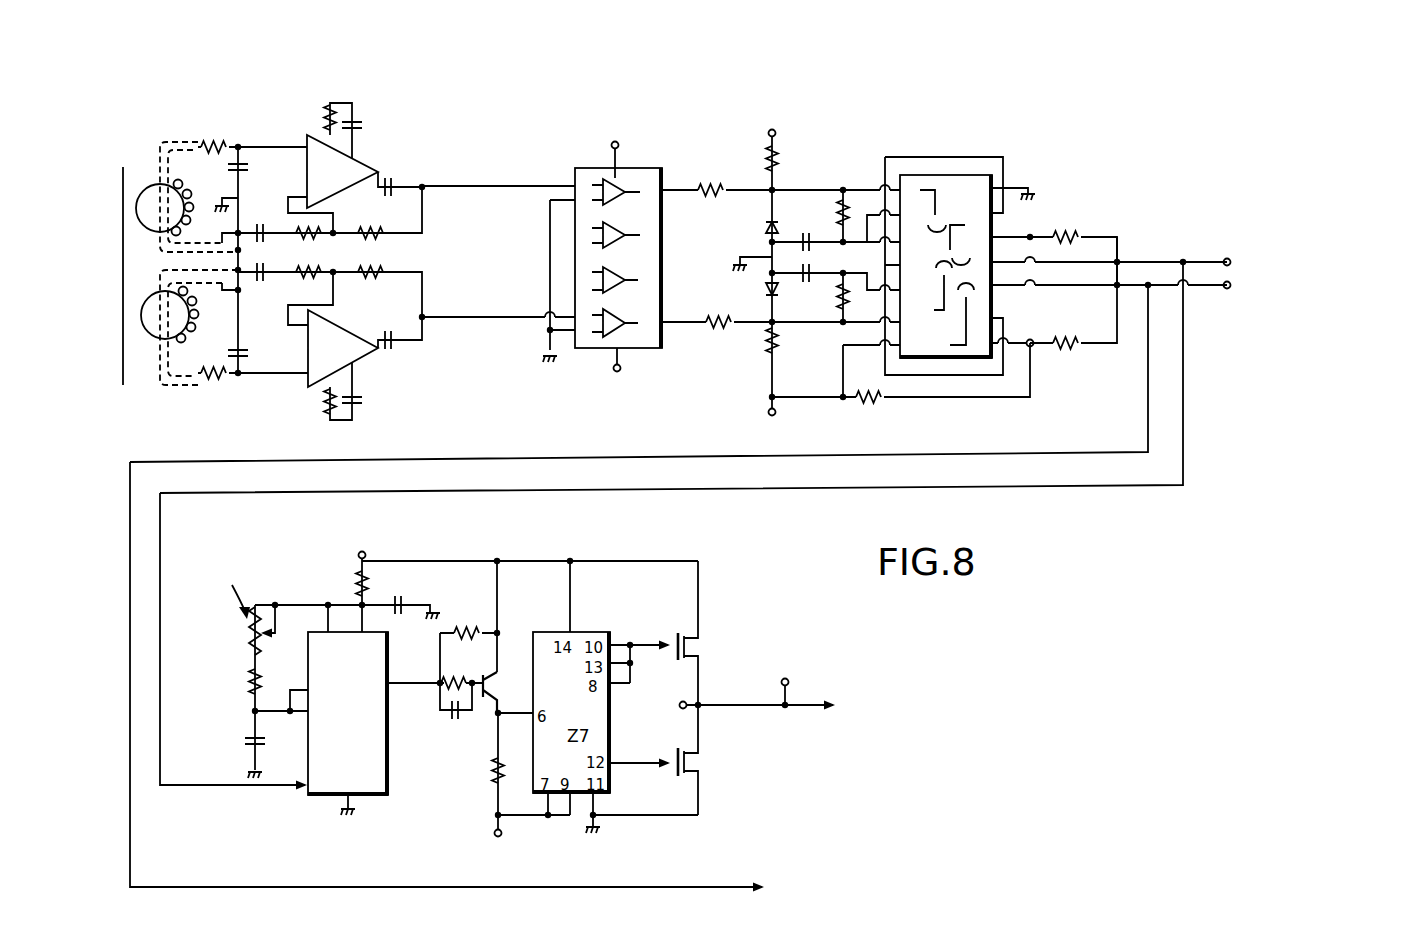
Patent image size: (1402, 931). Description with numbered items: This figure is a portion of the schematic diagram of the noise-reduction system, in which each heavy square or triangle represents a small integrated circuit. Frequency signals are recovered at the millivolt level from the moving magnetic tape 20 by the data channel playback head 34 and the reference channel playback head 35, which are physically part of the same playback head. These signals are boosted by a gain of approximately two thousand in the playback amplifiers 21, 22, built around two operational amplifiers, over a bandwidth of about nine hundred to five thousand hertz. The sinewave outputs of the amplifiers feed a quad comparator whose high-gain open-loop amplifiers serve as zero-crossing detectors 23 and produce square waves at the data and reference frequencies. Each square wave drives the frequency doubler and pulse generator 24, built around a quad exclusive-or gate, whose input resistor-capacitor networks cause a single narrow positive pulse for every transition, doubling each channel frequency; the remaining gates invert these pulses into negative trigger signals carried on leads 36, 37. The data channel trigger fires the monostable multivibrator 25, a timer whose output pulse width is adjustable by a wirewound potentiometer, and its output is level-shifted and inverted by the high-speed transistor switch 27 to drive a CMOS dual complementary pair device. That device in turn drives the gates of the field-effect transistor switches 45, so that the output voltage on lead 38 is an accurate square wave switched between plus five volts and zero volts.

The moving magnetic tape 20 is at (123, 190).
The playback amplifier 21 is at (425, 96).
The playback amplifier 22 is at (376, 332).
The zero-crossing detectors 23 is at (673, 100).
The frequency doubler and pulse generator 24 is at (1085, 100).
The monostable multivibrator 25 is at (437, 536).
The high-speed transistor switch 27 is at (532, 536).
The data channel playback head 34 is at (148, 188).
The reference channel playback head 35 is at (153, 337).
The lead 36 is at (160, 563).
The lead 37 is at (130, 610).
The lead 38 is at (729, 713).
The field-effect transistor switches 45 is at (683, 632).